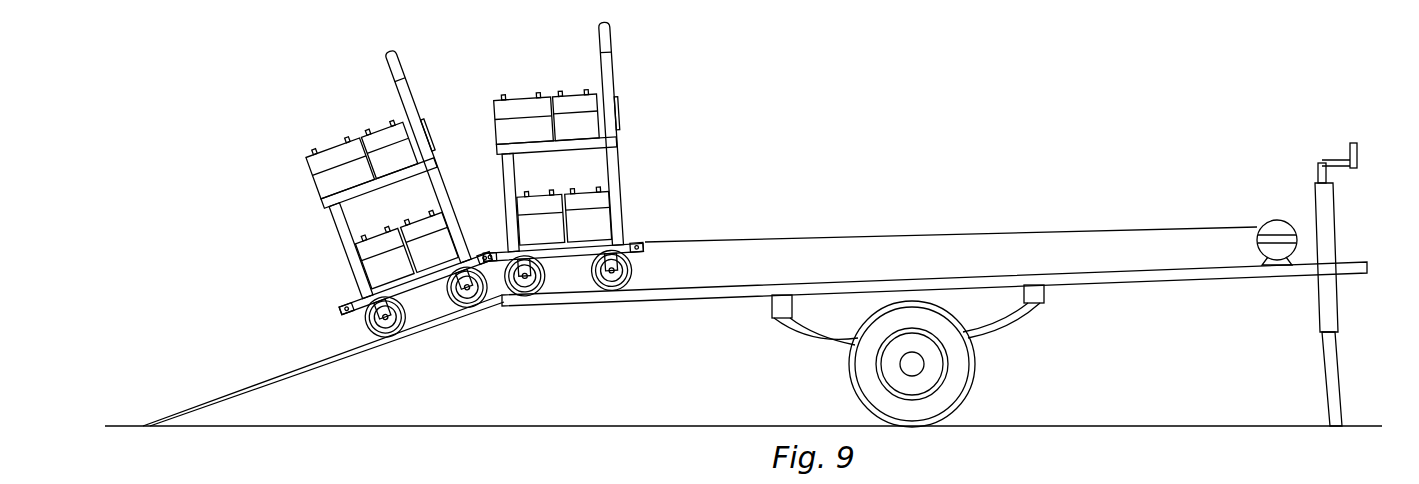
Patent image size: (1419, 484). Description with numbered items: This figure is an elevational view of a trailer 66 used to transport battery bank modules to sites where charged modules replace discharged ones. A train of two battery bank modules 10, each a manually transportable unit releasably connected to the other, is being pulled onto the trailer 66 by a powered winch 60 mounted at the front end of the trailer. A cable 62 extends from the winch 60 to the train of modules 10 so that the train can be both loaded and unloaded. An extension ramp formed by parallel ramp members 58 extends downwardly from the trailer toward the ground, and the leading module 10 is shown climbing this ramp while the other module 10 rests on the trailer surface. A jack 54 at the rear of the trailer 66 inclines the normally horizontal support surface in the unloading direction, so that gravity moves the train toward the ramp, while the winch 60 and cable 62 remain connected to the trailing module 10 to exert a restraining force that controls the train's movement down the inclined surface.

The battery bank module 10 is at (417, 73).
The jack 54 is at (1340, 300).
The ramp members 58 is at (272, 378).
The winch 60 is at (1282, 238).
The cable 62 is at (836, 238).
The trailer 66 is at (1147, 282).